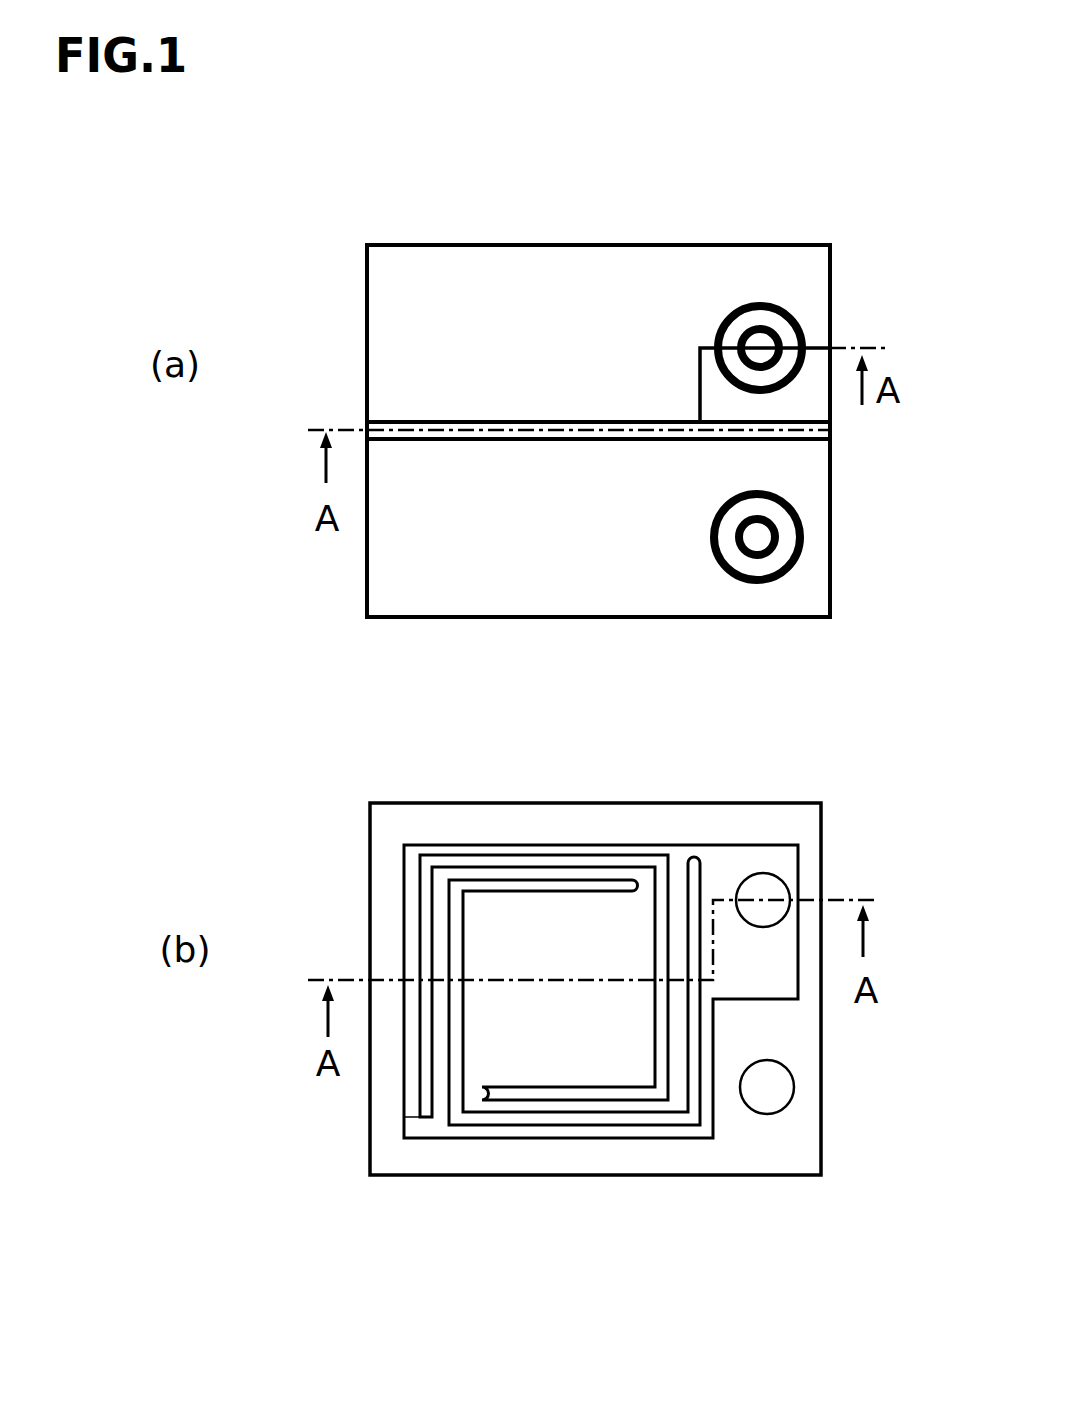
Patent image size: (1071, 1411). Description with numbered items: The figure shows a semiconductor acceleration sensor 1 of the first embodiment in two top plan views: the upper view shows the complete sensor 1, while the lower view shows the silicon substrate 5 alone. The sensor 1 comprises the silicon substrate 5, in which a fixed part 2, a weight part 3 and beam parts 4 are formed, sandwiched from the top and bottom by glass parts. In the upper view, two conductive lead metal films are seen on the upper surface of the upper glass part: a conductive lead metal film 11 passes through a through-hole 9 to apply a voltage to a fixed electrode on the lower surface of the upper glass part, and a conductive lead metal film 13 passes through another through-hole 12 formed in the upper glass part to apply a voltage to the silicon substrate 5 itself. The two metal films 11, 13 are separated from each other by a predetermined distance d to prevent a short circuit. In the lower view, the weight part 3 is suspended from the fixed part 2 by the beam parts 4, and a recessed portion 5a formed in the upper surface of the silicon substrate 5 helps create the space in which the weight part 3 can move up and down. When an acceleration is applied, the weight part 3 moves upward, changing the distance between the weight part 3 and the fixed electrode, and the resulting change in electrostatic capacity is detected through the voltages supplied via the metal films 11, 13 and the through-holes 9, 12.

The acceleration sensor 1 is at (812, 142).
The conductive lead metal film 11 is at (663, 262).
The conductive lead metal film 13 is at (810, 485).
The predetermined distance d is at (820, 432).
The through-hole 9 is at (752, 327).
The through-hole 12 is at (775, 538).
The silicon substrate 5 is at (810, 776).
The fixed part 2 is at (803, 1062).
The beam parts 4 is at (440, 922).
The weight part 3 is at (518, 1062).
The recessed portion 5a is at (415, 1130).